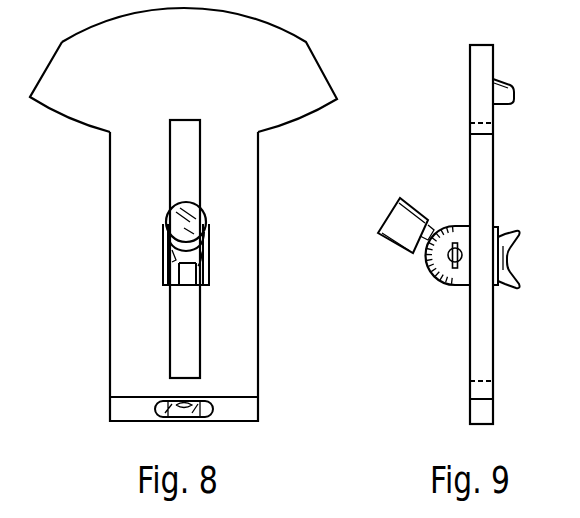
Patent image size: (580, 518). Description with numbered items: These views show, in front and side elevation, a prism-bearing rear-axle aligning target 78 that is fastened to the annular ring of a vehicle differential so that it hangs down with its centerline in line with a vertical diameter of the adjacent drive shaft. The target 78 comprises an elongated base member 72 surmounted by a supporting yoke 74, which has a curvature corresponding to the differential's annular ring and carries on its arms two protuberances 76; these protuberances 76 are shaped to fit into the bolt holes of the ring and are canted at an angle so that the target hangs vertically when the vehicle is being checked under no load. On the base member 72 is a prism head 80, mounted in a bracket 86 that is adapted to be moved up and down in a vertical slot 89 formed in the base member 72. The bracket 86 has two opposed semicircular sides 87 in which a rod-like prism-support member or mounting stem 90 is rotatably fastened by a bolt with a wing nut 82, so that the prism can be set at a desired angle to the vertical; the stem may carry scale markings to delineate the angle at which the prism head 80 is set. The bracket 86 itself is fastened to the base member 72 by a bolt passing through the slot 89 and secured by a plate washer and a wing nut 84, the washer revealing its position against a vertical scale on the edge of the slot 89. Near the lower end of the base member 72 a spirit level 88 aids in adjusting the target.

In FIG. 8, the base member 72 is at (243, 358).
In FIG. 9, the base member 72 is at (487, 165).
In FIG. 8, the supporting yoke 74 is at (235, 77).
In FIG. 9, the protuberances 76 is at (515, 85).
In FIG. 9, the target 78 is at (443, 182).
In FIG. 8, the prism head 80 is at (205, 212).
In FIG. 9, the prism head 80 is at (395, 250).
In FIG. 9, the wing nut 82 is at (458, 277).
In FIG. 9, the wing nut 84 is at (513, 235).
In FIG. 9, the bracket 86 is at (430, 267).
In FIG. 8, the semicircular sides 87 is at (210, 275).
In FIG. 8, the spirit level 88 is at (213, 408).
In FIG. 8, the vertical slot 89 is at (185, 162).
In FIG. 9, the mounting stem 90 is at (435, 225).